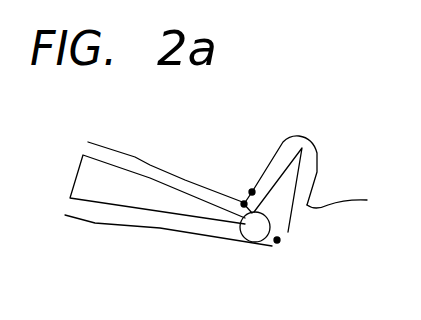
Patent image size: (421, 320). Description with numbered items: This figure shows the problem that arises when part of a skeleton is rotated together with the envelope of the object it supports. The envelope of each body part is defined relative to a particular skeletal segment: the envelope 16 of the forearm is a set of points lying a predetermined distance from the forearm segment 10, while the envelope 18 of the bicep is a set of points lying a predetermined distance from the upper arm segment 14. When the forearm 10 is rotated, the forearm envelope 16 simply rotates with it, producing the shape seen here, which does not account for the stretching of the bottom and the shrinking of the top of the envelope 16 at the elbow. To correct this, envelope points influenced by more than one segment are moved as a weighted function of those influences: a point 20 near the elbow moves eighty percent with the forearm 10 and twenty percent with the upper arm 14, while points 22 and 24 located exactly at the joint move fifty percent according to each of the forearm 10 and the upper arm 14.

The forearm segment 10 is at (297, 167).
The upper arm segment 14 is at (163, 215).
The forearm envelope 16 is at (351, 205).
The bicep envelope 18 is at (140, 157).
The point near the elbow 20 is at (252, 192).
The point at the joint 22 is at (248, 246).
The point at the joint 24 is at (277, 240).